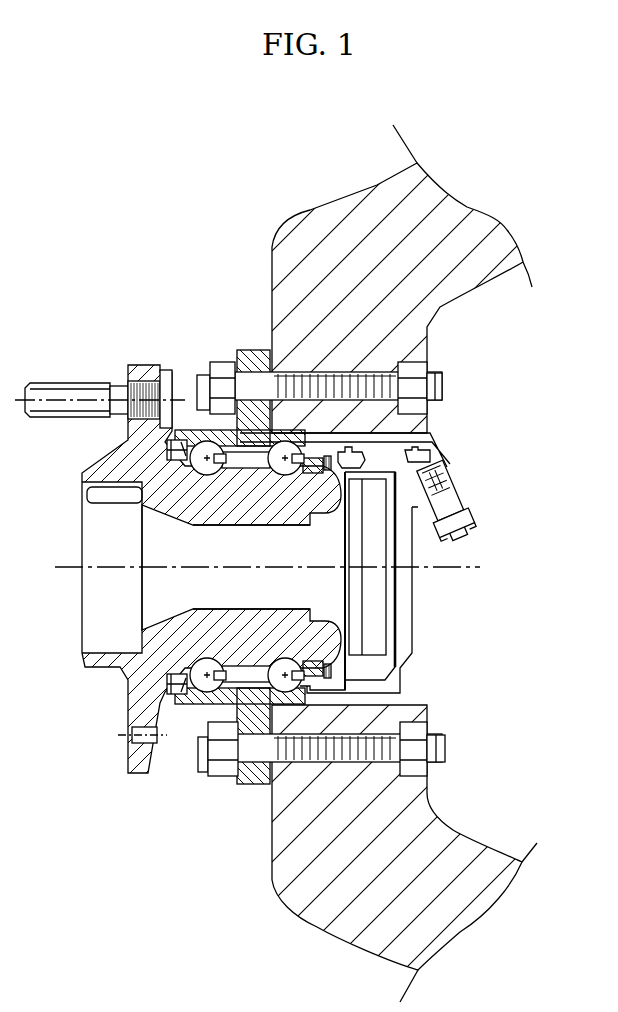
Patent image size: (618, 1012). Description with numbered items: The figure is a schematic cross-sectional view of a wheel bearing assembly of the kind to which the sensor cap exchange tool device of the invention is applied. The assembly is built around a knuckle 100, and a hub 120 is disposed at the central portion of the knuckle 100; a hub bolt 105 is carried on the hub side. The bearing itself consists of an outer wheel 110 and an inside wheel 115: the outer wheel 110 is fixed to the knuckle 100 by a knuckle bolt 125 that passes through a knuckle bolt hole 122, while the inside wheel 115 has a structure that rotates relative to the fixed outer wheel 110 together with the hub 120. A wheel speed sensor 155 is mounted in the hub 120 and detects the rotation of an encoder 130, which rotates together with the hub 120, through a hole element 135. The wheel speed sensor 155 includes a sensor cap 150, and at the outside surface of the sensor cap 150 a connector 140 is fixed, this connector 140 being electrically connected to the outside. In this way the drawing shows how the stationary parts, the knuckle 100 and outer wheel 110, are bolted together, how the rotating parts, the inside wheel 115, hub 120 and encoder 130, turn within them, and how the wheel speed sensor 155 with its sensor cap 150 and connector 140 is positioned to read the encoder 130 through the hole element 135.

The knuckle 100 is at (310, 307).
The hub bolt 105 is at (68, 378).
The outer wheel 110 is at (160, 438).
The inside wheel 115 is at (280, 510).
The hub 120 is at (260, 525).
The knuckle bolt hole 122 is at (358, 385).
The knuckle bolt 125 is at (442, 387).
The encoder 130 is at (337, 428).
The hole element 135 is at (367, 453).
The connector 140 is at (467, 505).
The sensor cap 150 is at (400, 550).
The wheel speed sensor 155 is at (420, 603).